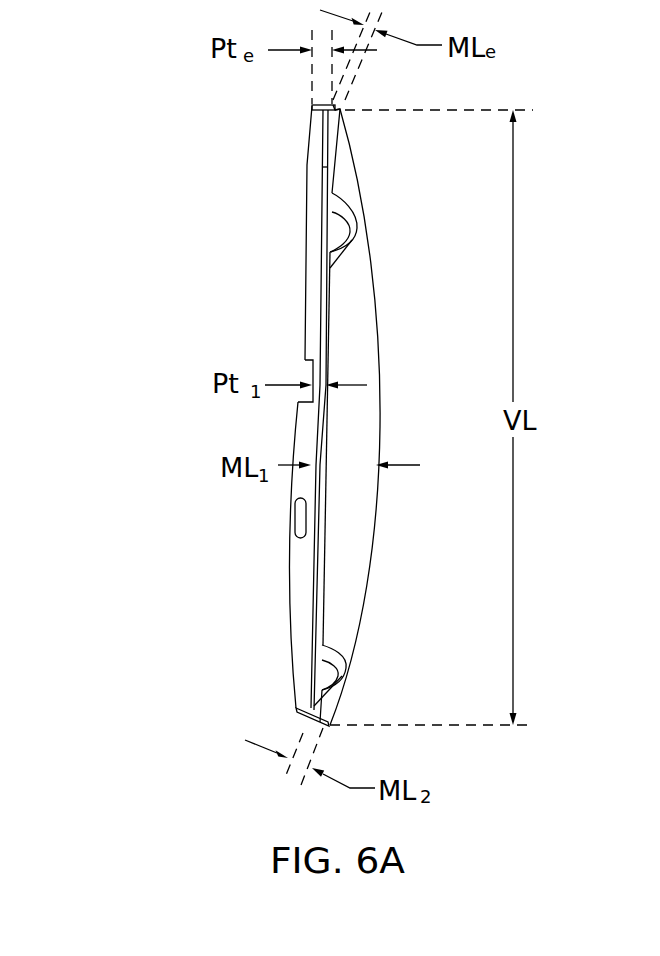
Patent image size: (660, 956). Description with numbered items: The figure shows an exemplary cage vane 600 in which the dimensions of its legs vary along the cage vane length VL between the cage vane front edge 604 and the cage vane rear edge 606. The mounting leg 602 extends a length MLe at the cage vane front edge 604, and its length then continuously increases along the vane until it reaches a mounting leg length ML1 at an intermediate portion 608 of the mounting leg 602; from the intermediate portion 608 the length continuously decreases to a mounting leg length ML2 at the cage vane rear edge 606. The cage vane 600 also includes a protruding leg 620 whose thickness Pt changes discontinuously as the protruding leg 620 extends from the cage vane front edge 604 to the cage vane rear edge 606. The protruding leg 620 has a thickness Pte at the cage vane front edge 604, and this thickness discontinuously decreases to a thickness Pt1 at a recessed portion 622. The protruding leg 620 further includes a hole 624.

The cage vane 600 is at (220, 229).
The mounting leg 602 is at (352, 527).
The cage vane front edge 604 is at (340, 108).
The cage vane rear edge 606 is at (303, 729).
The intermediate portion 608 is at (378, 460).
The protruding leg 620 is at (320, 142).
The recessed portion 622 is at (305, 370).
The hole 624 is at (297, 525).